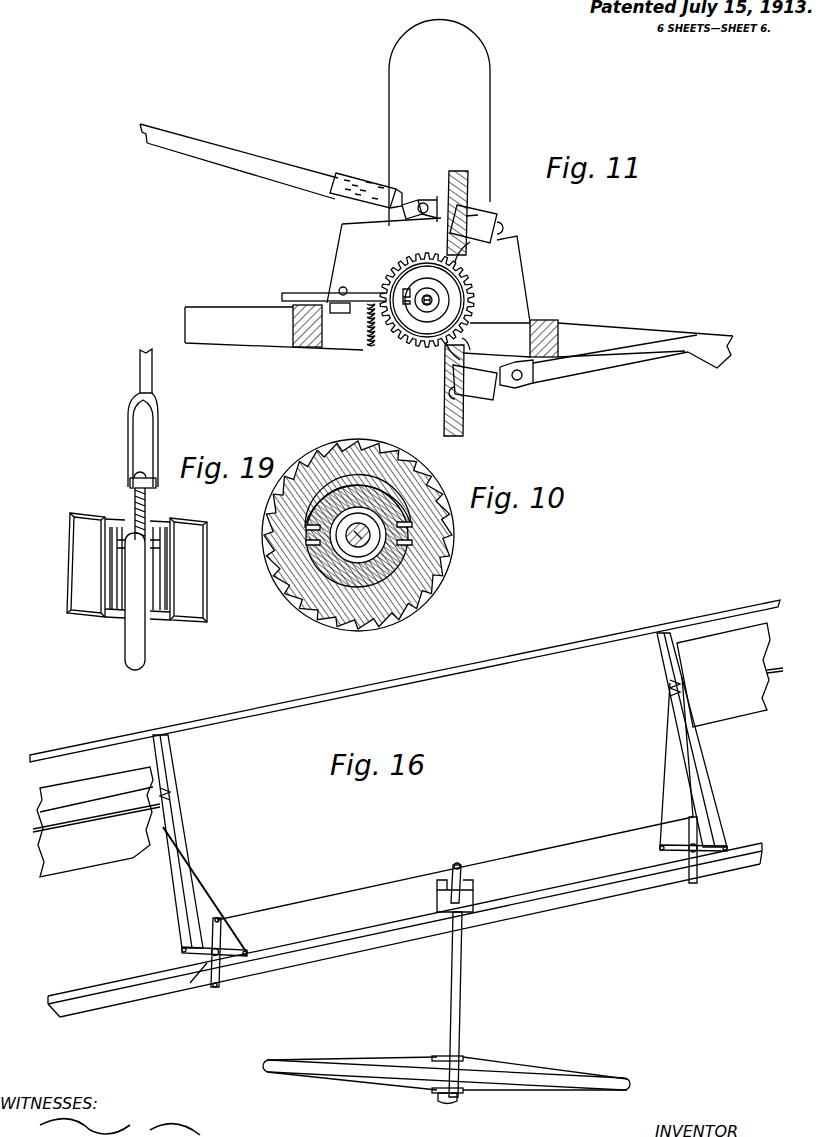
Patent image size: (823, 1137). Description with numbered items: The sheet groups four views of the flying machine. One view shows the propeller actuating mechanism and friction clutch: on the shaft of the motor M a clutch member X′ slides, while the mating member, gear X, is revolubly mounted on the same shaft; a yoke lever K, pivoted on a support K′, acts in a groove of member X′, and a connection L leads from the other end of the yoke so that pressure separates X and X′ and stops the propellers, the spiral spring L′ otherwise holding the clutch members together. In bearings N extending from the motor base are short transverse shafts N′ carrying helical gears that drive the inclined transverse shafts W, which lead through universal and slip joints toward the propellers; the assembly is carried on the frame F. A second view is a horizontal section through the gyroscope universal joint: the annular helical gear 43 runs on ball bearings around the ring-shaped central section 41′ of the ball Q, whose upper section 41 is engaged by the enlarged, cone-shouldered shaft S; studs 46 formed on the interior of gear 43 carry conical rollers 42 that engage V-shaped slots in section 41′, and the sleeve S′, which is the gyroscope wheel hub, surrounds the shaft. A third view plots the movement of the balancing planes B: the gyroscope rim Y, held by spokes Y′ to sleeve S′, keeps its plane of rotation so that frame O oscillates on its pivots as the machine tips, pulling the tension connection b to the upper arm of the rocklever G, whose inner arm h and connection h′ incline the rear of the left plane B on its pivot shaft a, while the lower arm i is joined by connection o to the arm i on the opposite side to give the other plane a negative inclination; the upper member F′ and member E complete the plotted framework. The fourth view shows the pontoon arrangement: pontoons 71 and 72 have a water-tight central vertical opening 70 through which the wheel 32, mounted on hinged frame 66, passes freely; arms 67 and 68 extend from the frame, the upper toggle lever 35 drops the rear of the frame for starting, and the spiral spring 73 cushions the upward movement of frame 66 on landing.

In FIG. 11, the motor M is at (439, 122).
In FIG. 11, the transverse shaft W is at (229, 166).
In FIG. 11, the gear X is at (473, 292).
In FIG. 11, the clutch member X′ is at (426, 294).
In FIG. 11, the bearing N is at (473, 302).
In FIG. 11, the short transverse shaft N′ is at (506, 230).
In FIG. 11, the connection L is at (282, 292).
In FIG. 11, the spiral spring L′ is at (367, 333).
In FIG. 11, the yoke lever K is at (290, 293).
In FIG. 11, the support K′ is at (340, 308).
In FIG. 11, the frame F is at (459, 337).
In FIG. 16, the frame F is at (167, 792).
In FIG. 10, the annular helical gear 43 is at (358, 535).
In FIG. 10, the upper section of ball 41 is at (302, 540).
In FIG. 10, the central section of ball 41′ is at (358, 501).
In FIG. 10, the stud 46 is at (306, 533).
In FIG. 10, the conical roller 42 is at (383, 535).
In FIG. 10, the shaft S is at (362, 526).
In FIG. 10, the sleeve S′ is at (361, 547).
In FIG. 16, the sleeve S′ is at (460, 995).
In FIG. 19, the upper toggle lever 35 is at (160, 413).
In FIG. 19, the spiral spring 73 is at (148, 500).
In FIG. 19, the wheel 32 is at (137, 642).
In FIG. 19, the pontoon 72 is at (110, 567).
In FIG. 19, the pontoon 71 is at (168, 581).
In FIG. 19, the arm 67 is at (114, 527).
In FIG. 19, the hinged frame 66 is at (140, 558).
In FIG. 19, the central vertical opening 70 is at (165, 527).
In FIG. 19, the arm 68 is at (145, 537).
In FIG. 16, the upper frame beam F′ is at (405, 681).
In FIG. 16, the balancing plane B is at (403, 750).
In FIG. 16, the rod a is at (406, 749).
In FIG. 16, the connection h′ is at (207, 889).
In FIG. 16, the inner arm h is at (240, 947).
In FIG. 16, the lower arm i is at (221, 975).
In FIG. 16, the rocklever G is at (186, 980).
In FIG. 16, the connecting wire b is at (573, 840).
In FIG. 16, the circular rim E is at (405, 930).
In FIG. 16, the connection o is at (342, 964).
In FIG. 16, the frame O is at (461, 878).
In FIG. 16, the ball Q is at (467, 918).
In FIG. 16, the gyroscope rim Y is at (632, 1082).
In FIG. 16, the spoke Y′ is at (447, 1076).